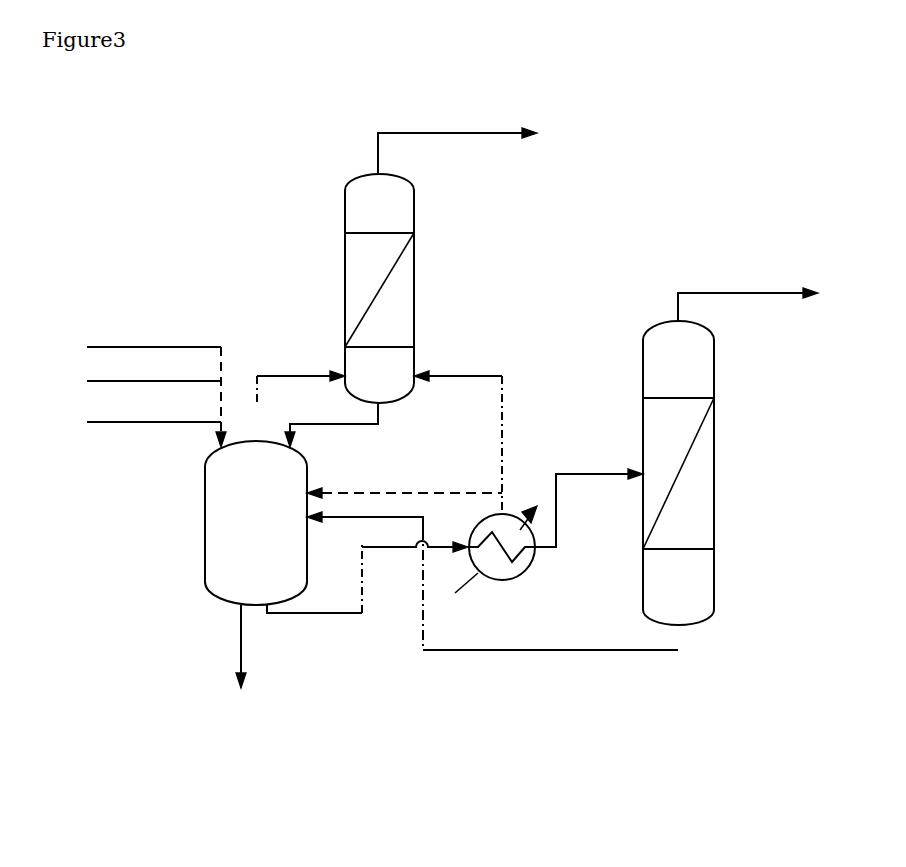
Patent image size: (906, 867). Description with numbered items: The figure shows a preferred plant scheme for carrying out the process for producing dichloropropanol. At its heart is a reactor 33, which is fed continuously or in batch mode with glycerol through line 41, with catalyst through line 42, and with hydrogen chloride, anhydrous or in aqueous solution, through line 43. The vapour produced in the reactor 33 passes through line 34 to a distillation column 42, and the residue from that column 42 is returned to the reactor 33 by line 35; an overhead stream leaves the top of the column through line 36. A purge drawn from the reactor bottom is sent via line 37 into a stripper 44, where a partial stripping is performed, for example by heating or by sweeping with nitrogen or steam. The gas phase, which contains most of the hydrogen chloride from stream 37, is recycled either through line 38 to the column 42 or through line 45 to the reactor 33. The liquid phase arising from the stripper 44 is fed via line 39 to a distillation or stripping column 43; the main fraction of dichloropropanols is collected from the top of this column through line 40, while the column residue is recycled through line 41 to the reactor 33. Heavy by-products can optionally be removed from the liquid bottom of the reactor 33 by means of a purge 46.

The reactor 33 is at (231, 523).
The line 34 is at (296, 364).
The line 35 is at (332, 438).
The overhead product line 36 is at (457, 128).
The line 37 is at (367, 603).
The line 38 is at (458, 443).
The line 39 is at (589, 484).
The line 40 is at (748, 283).
The line 41 is at (359, 500).
The distillation column 42 is at (227, 288).
The distillation or stripping column 43 is at (402, 473).
The stripper 44 is at (505, 567).
The line 45 is at (404, 470).
The purge 46 is at (264, 646).